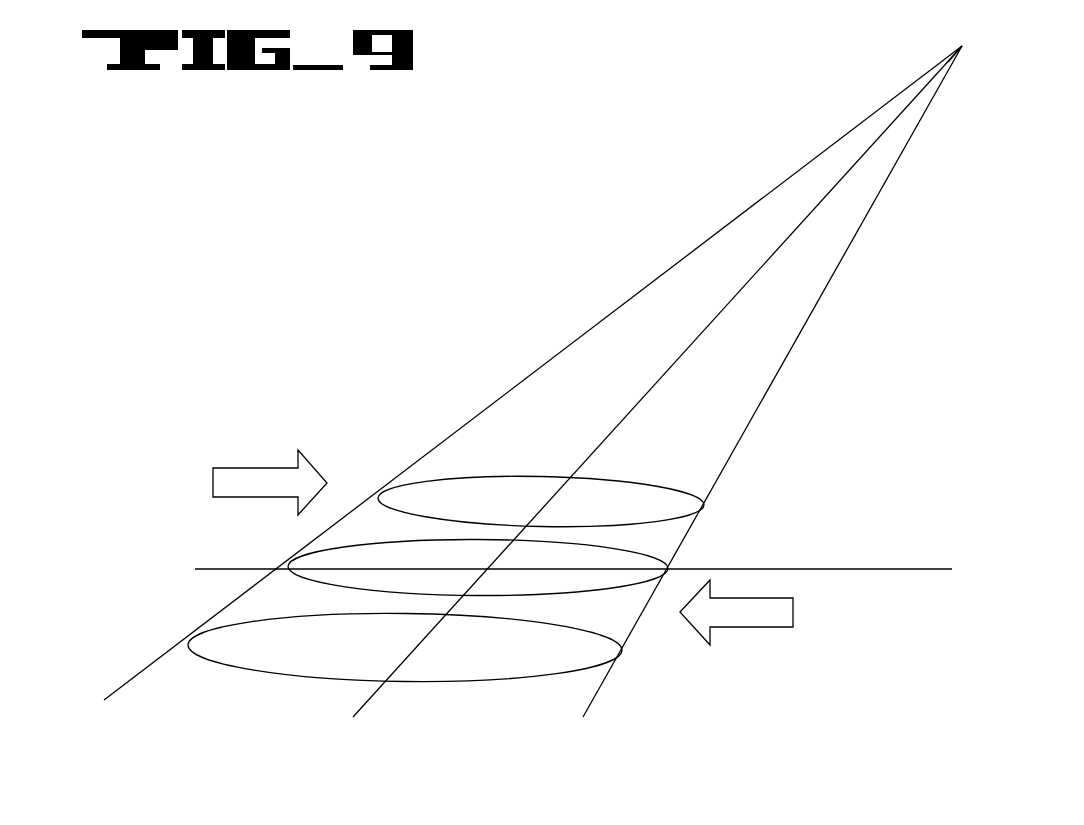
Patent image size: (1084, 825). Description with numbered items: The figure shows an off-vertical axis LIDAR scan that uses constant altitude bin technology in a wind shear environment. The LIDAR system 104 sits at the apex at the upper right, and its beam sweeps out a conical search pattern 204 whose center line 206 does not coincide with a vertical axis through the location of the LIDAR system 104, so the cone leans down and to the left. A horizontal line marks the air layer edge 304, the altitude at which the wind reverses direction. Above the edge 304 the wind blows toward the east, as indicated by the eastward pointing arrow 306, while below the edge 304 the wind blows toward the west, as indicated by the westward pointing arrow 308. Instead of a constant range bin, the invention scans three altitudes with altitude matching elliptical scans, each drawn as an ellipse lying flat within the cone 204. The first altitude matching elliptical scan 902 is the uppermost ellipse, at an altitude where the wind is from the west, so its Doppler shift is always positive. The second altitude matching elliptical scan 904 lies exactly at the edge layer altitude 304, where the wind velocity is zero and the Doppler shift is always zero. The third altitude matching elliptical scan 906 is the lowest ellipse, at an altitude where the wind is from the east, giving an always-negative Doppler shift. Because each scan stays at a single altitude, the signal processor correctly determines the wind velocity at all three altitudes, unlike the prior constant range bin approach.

The LIDAR system 104 is at (962, 46).
The conical search pattern 204 is at (630, 298).
The center line 206 is at (682, 357).
The air layer edge 304 is at (780, 570).
The eastward pointing arrow 306 is at (260, 468).
The westward pointing arrow 308 is at (787, 628).
The first altitude matching elliptical scan 902 is at (475, 476).
The second altitude matching elliptical scan 904 is at (317, 550).
The third altitude matching elliptical scan 906 is at (257, 672).